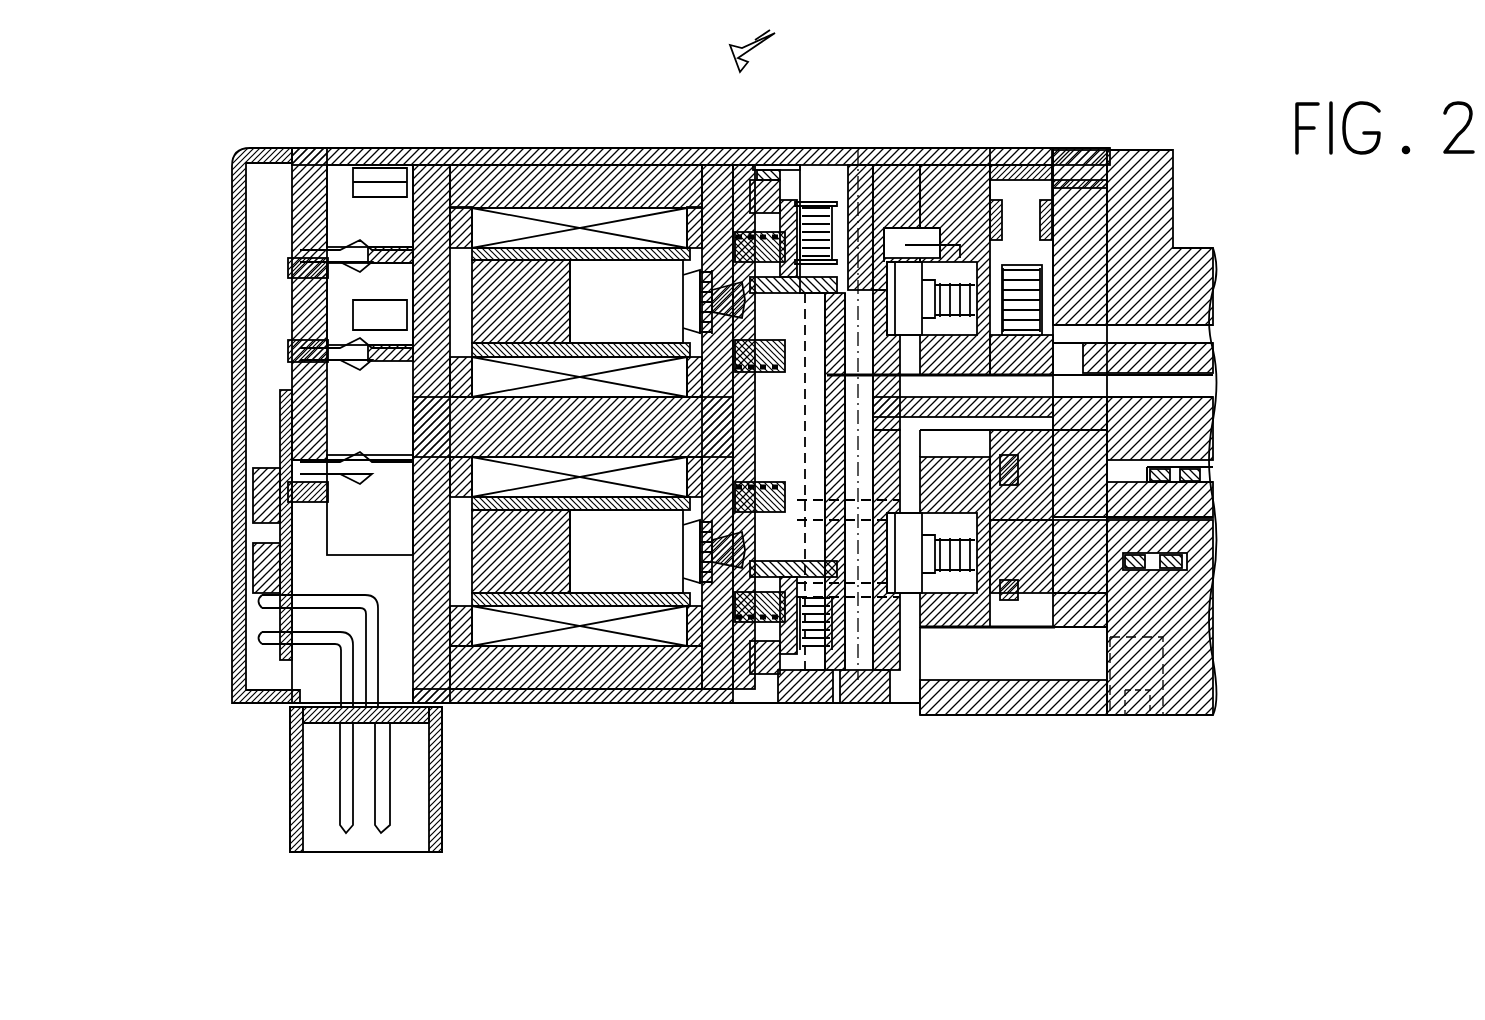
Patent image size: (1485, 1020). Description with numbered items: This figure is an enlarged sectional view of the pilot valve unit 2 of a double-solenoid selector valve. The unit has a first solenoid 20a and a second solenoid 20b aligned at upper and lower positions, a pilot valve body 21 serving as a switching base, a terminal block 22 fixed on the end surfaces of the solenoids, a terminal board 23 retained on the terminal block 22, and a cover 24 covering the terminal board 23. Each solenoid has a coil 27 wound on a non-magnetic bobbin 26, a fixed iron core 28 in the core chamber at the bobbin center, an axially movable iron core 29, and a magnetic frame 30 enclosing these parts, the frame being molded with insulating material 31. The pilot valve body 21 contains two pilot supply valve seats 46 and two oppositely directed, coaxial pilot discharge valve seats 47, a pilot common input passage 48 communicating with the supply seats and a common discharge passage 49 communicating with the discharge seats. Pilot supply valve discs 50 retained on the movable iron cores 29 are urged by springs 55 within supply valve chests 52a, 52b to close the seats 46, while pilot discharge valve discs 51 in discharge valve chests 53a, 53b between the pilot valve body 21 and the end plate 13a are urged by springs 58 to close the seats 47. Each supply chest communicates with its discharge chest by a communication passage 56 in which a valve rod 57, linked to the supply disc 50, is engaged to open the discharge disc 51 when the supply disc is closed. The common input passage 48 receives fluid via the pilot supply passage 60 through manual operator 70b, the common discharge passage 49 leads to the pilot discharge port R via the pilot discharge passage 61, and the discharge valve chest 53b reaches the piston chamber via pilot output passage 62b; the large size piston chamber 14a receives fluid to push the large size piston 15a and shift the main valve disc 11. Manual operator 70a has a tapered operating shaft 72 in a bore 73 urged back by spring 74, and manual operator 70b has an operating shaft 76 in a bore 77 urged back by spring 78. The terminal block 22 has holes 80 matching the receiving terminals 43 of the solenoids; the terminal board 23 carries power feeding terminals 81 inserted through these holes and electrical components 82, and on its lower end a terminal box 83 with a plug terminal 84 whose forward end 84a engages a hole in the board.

The pilot valve unit 2 is at (761, 36).
The first solenoid 20a is at (641, 133).
The second solenoid 20b is at (640, 735).
The terminal board 23 is at (283, 148).
The terminal block 22 is at (337, 148).
The magnetic frame 30 is at (420, 148).
The insulating material 31 is at (467, 148).
The fixed iron core 28 is at (503, 148).
The coil 27 is at (552, 228).
The bobbin 26 is at (580, 240).
The movable iron core 29 is at (590, 275).
The pilot supply valve seat 46 is at (692, 296).
The supply valve chest 52a is at (700, 316).
The supply valve chest 52b is at (700, 540).
The pilot supply valve disc 50 is at (762, 255).
The spring 55 is at (752, 228).
The bore 73 is at (805, 228).
The operating shaft 72 is at (815, 200).
The spring 74 is at (866, 258).
The communication passage 56 is at (812, 620).
The valve rod 57 is at (862, 610).
The pilot common input passage 48 is at (798, 705).
The common discharge passage 49 is at (862, 705).
The pilot valve body 21 is at (895, 235).
The pilot discharge valve disc 51 is at (935, 262).
The pilot discharge valve seat 47 is at (950, 240).
The pilot output passage 62b is at (995, 215).
The operating shaft 76 is at (1000, 175).
The manual operator 70a is at (834, 135).
The manual operator 70b is at (1077, 135).
The bore 77 is at (1070, 245).
The spring 78 is at (1158, 185).
The pilot supply passage 60 is at (1150, 330).
The large size piston chamber 14a is at (1143, 442).
The main valve disc 11 is at (1213, 470).
The discharge valve chest 53a is at (1115, 290).
The discharge valve chest 53b is at (962, 605).
The large size piston 15a is at (1055, 560).
The spring 58 is at (1000, 655).
The pilot discharge passage 61 is at (1050, 640).
The end plate 13a is at (955, 700).
The pilot discharge port R is at (1140, 700).
The power feeding terminal 81 is at (322, 218).
The cover 24 is at (295, 266).
The receiving terminal 43 is at (292, 268).
The hole 80 is at (300, 352).
The electrical component 82 is at (253, 512).
The forward end of plug terminal 84a is at (262, 612).
The terminal box 83 is at (292, 765).
The plug terminal 84 is at (345, 805).